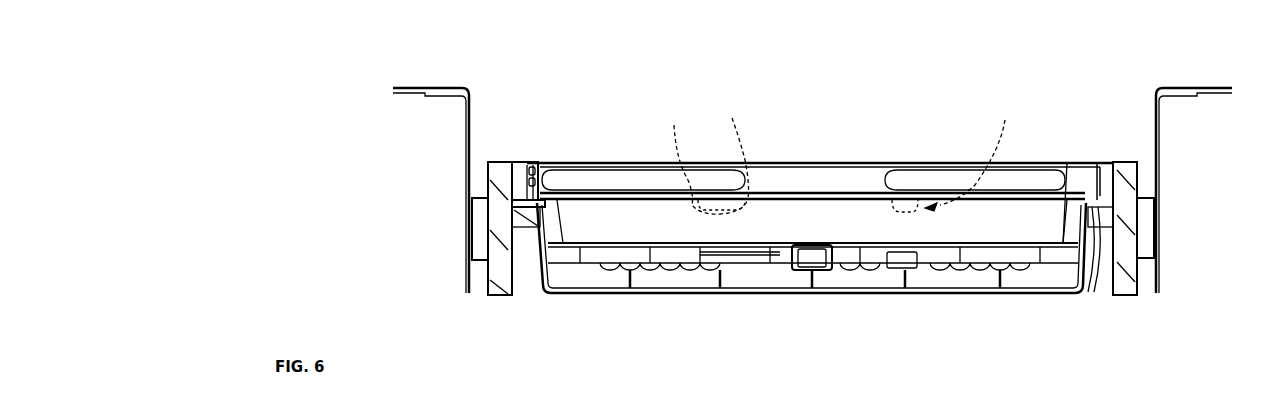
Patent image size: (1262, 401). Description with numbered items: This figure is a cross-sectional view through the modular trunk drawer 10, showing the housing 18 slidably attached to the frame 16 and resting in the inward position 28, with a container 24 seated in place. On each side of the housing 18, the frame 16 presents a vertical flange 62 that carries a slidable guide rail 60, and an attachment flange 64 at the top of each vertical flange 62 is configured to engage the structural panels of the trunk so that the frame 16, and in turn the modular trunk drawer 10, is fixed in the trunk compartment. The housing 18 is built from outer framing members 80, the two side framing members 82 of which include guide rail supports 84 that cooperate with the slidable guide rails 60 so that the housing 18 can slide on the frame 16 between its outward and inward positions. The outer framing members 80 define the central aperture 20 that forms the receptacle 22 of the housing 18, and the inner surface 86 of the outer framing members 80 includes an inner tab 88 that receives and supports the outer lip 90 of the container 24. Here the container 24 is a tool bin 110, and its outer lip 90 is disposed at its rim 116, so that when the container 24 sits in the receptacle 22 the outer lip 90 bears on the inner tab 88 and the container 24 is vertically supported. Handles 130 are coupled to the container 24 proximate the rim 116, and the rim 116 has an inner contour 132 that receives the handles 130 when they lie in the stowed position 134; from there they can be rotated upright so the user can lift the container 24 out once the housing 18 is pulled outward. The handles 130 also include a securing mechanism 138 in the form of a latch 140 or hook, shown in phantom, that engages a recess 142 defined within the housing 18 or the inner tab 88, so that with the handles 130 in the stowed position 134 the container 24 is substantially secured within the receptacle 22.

The modular trunk drawer 10 is at (352, 102).
The frame 16 is at (444, 147).
The housing 18 is at (483, 305).
The central aperture 20 is at (506, 160).
The receptacle 22 is at (531, 270).
The container 24 is at (897, 294).
The inward position 28 is at (1103, 118).
The slidable guide rails 60 is at (1140, 197).
The vertical flanges 62 is at (1160, 150).
The attachment flanges 64 is at (1185, 88).
The outer framing members 80 is at (1125, 296).
The side framing members 82 is at (1126, 247).
The guide rail supports 84 is at (1146, 224).
The inner surface 86 is at (515, 296).
The inner tab 88 is at (522, 218).
The outer lip 90 is at (1089, 293).
The tool bin 110 is at (775, 270).
The rim 116 is at (755, 172).
The handles 130 is at (606, 180).
The inner contour 132 is at (843, 180).
The stowed position 134 is at (1088, 156).
The securing mechanism 138 is at (956, 156).
The latch 140 is at (723, 154).
The recess 142 is at (703, 157).